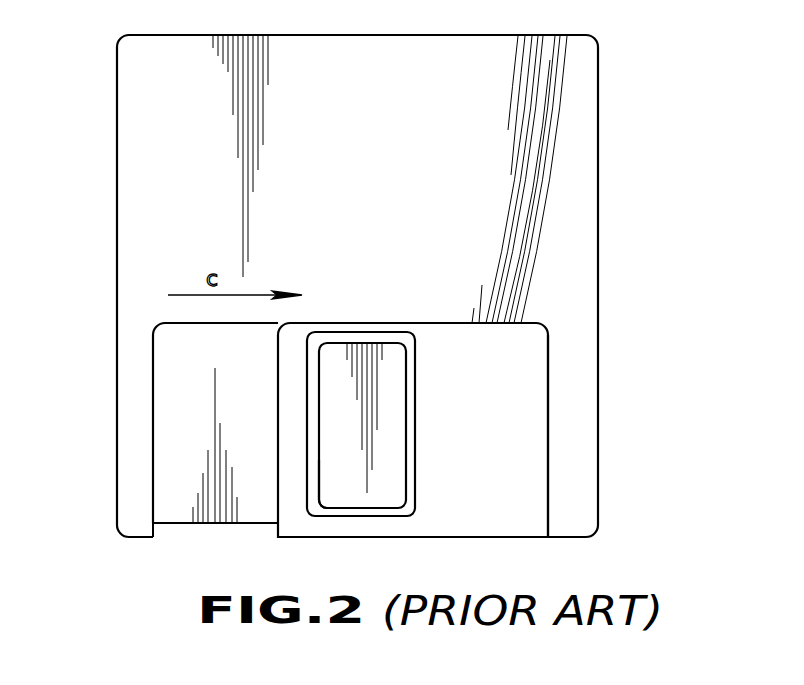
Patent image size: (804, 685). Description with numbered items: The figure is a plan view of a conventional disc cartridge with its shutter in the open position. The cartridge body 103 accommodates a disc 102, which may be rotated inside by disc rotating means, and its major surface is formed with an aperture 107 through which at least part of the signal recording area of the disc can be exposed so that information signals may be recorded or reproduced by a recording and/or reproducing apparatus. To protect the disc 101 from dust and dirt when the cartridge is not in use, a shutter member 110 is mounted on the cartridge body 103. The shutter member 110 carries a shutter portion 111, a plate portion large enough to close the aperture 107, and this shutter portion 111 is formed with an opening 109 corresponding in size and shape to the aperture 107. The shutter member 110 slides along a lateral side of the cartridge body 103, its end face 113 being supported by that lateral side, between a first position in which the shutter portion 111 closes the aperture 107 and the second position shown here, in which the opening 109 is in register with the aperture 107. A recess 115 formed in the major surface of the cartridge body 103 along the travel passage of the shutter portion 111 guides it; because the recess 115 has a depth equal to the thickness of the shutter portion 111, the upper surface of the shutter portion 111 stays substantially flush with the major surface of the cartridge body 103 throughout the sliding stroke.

The disc 101 is at (610, 77).
The cartridge body 103 is at (598, 168).
The aperture 107 is at (322, 358).
The opening 109 is at (395, 452).
The recess 115 is at (547, 360).
The shutter portion 111 is at (528, 458).
The end face 113 is at (318, 527).
The disc 102 is at (383, 500).
The shutter member 110 is at (505, 539).